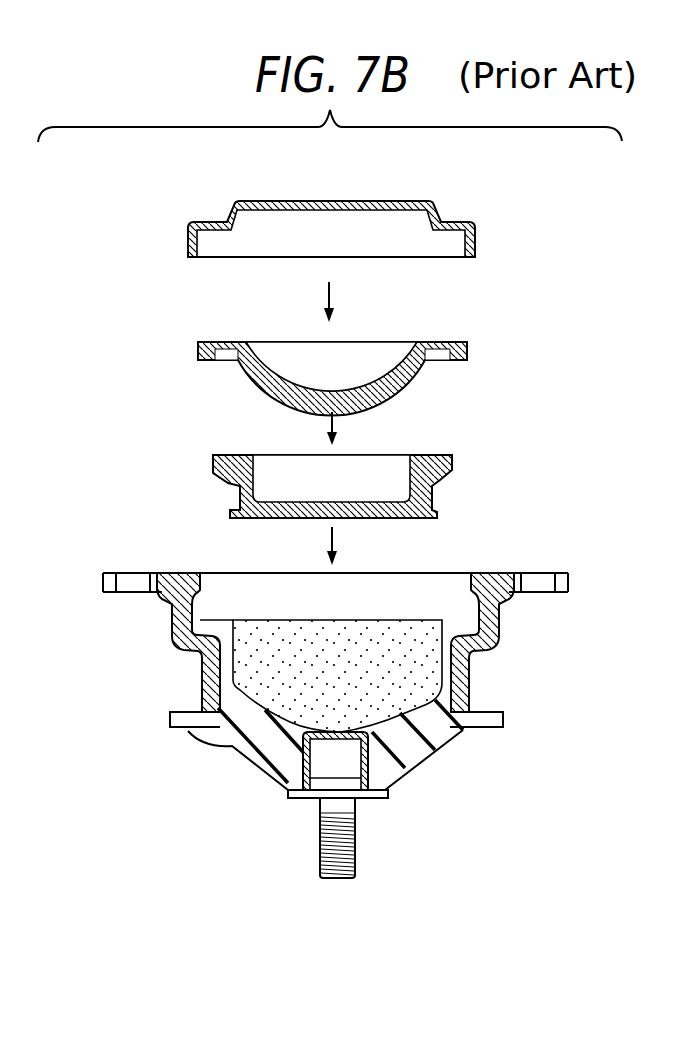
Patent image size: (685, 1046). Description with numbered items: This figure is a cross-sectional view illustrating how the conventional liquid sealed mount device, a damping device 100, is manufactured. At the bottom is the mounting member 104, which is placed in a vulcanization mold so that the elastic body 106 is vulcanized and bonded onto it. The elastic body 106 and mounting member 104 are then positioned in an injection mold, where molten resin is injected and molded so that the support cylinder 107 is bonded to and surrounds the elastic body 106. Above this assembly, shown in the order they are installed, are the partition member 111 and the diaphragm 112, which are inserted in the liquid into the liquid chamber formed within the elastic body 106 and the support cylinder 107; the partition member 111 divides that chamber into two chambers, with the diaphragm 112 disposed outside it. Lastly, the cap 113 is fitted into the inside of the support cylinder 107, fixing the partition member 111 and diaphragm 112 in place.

The damping device 100 is at (104, 268).
The mounting member 104 is at (296, 802).
The elastic body 106 is at (422, 752).
The support cylinder 107 is at (470, 668).
The partition member 111 is at (450, 468).
The diaphragm 112 is at (398, 368).
The cap 113 is at (475, 235).